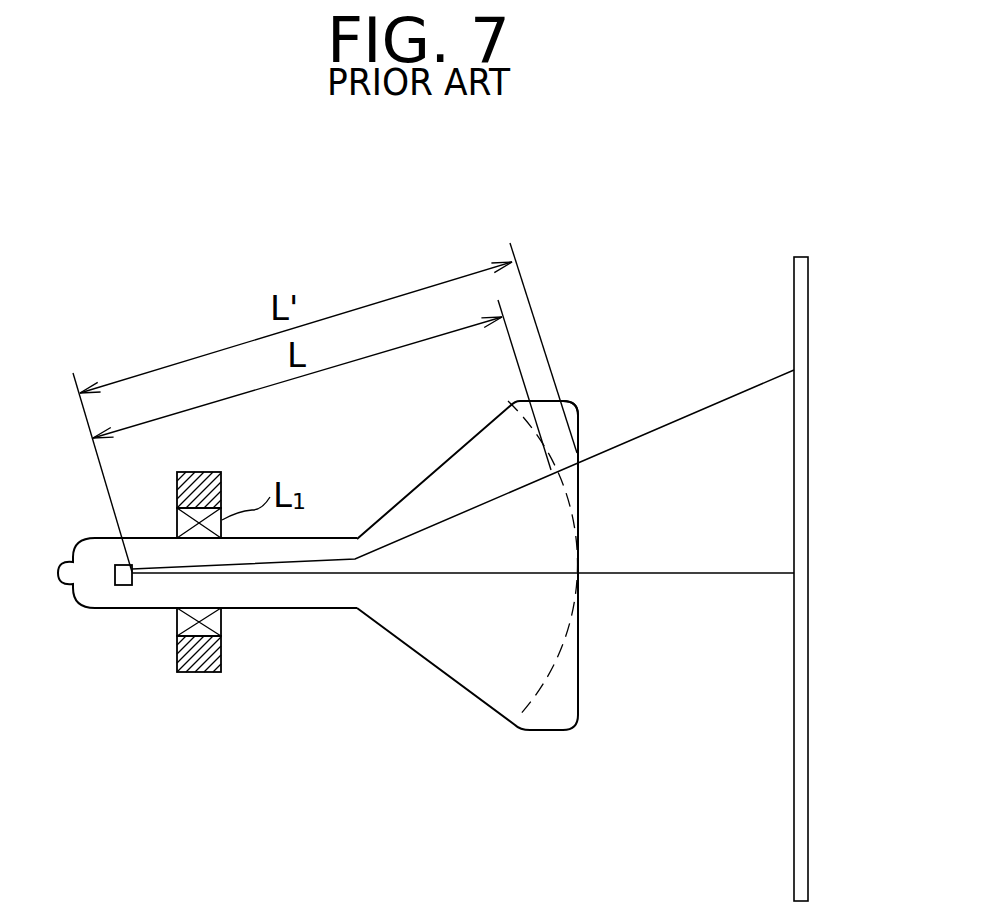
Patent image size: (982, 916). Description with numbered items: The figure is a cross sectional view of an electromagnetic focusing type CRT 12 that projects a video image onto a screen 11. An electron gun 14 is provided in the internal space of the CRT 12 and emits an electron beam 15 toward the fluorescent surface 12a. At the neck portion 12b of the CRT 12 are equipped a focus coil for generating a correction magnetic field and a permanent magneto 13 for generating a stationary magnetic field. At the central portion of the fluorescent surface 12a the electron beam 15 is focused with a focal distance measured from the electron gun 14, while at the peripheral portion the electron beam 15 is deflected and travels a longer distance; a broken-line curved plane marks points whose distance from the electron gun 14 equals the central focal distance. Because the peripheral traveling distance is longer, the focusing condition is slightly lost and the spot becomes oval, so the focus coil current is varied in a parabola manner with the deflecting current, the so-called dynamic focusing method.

The screen 11 is at (800, 256).
The CRT 12 is at (540, 733).
The fluorescent surface 12a is at (578, 417).
The neck portion 12b is at (253, 608).
The permanent magneto 13 is at (222, 472).
The electron gun 14 is at (118, 588).
The electron beam 15 is at (303, 562).